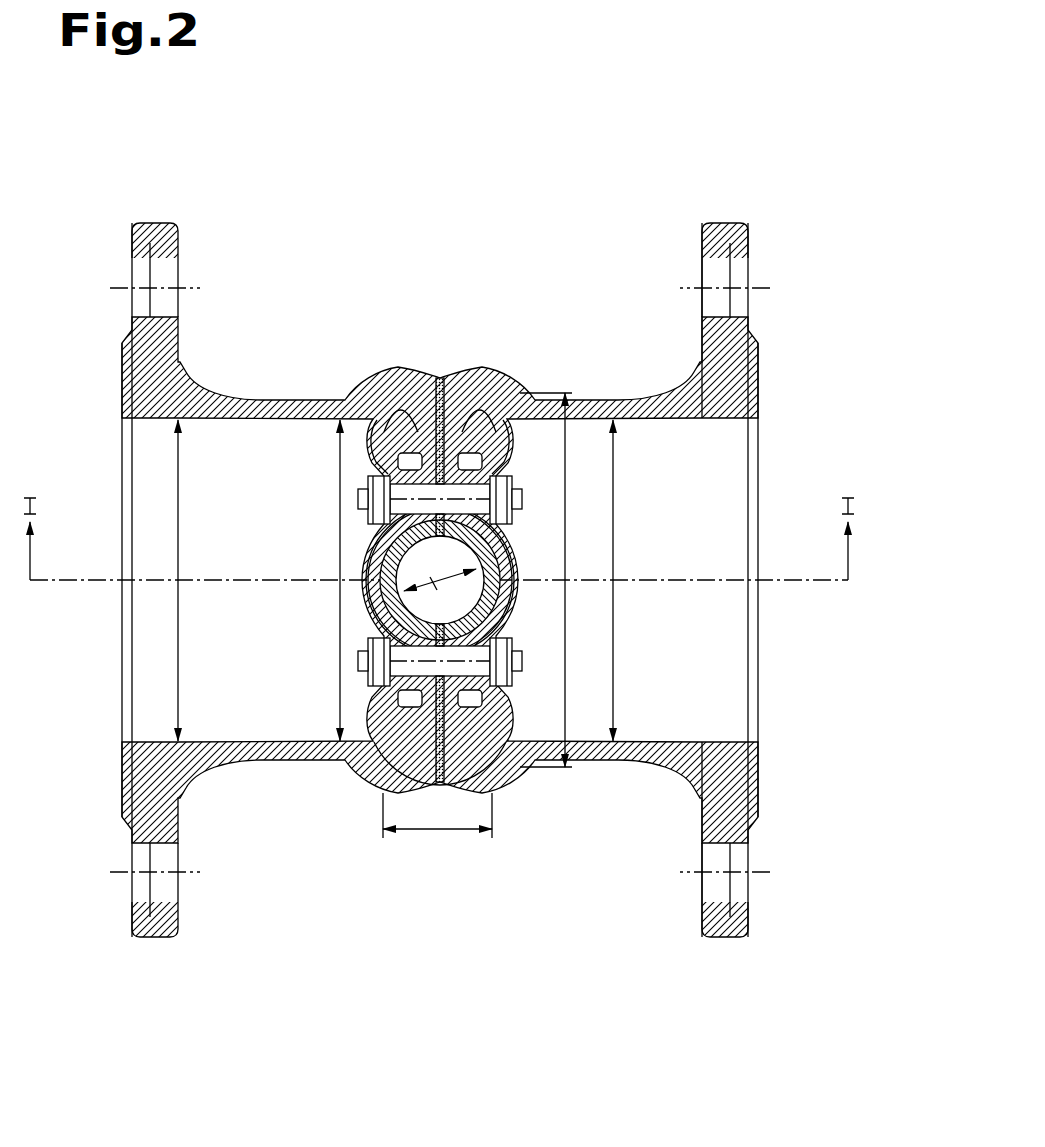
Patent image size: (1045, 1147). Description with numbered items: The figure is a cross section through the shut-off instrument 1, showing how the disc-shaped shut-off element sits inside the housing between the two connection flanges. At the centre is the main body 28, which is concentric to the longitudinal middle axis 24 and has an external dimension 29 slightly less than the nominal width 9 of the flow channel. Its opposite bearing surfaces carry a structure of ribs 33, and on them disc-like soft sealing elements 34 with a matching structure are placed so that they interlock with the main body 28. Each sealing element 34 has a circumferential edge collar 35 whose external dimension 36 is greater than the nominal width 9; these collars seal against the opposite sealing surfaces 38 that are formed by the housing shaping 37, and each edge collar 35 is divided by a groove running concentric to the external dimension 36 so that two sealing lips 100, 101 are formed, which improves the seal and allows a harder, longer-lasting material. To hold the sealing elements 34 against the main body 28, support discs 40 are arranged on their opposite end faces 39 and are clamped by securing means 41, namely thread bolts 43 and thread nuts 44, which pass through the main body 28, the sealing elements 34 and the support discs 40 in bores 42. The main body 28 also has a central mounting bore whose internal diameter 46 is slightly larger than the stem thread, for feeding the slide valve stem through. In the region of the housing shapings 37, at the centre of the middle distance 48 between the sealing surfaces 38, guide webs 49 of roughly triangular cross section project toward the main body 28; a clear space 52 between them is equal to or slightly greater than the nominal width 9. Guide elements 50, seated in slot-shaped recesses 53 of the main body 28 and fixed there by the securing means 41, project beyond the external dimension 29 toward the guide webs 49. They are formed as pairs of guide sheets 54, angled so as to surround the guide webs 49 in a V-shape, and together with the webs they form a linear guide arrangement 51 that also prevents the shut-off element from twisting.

The shut-off instrument 1 is at (633, 140).
The nominal width 9 is at (615, 479).
The longitudinal middle axis 24 is at (500, 598).
The main body 28 is at (517, 556).
The external dimension 29 is at (339, 510).
The ribs 33 is at (377, 695).
The sealing elements 34 is at (417, 374).
The edge collar 35 is at (492, 793).
The external dimension 36 is at (566, 529).
The housing shaping 37 is at (355, 357).
The sealing surfaces 38 is at (393, 378).
The end faces 39 is at (380, 533).
The support discs 40 is at (365, 596).
The securing means 41 is at (377, 493).
The bores 42 is at (440, 580).
The thread bolts 43 is at (513, 500).
The thread nuts 44 is at (512, 660).
The internal diameter 46 is at (467, 613).
The middle distance 48 is at (441, 834).
The guide webs 49 is at (457, 381).
The guide elements 50 is at (432, 380).
The linear guide arrangement 51 is at (487, 368).
The clear space 52 is at (178, 613).
The recesses 53 is at (436, 381).
The guide sheets 54 is at (477, 375).
The sealing lip 100 is at (353, 762).
The sealing lip 101 is at (377, 785).